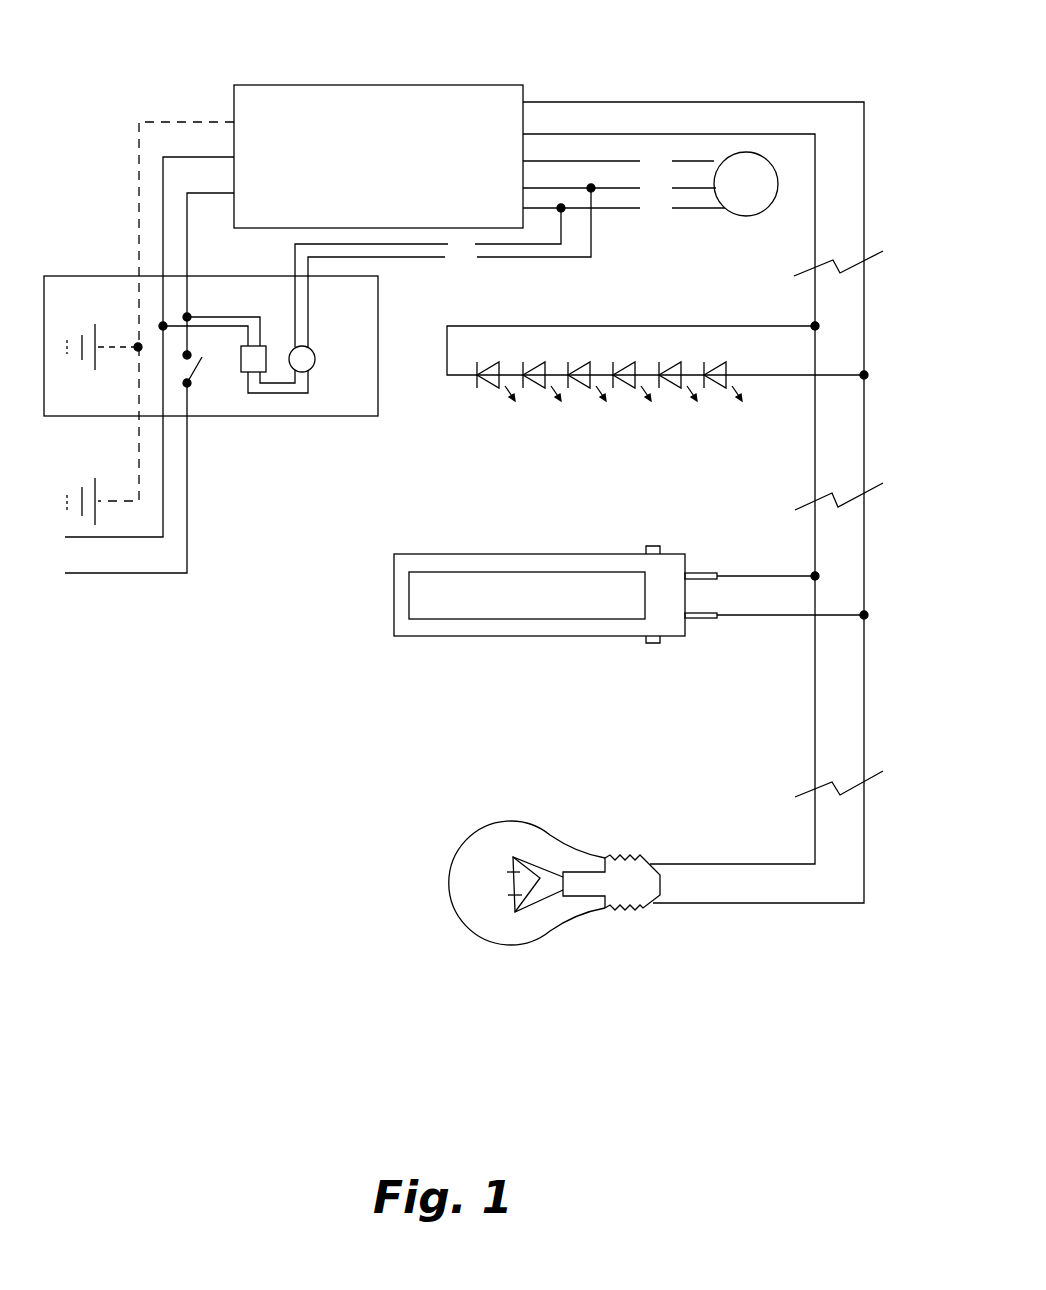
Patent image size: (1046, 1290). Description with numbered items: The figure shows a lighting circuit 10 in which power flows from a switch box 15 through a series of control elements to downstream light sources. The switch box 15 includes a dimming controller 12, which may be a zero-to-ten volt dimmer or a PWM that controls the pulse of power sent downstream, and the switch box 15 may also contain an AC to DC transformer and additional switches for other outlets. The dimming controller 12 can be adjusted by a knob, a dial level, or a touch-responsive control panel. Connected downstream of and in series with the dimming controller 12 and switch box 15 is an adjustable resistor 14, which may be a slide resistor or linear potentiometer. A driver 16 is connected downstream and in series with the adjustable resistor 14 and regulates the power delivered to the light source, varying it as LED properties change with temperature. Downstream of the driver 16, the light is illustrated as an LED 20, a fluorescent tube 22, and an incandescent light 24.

The circuit 10 is at (751, 50).
The dimming controller 12 is at (316, 367).
The adjustable resistor 14 is at (740, 217).
The switch box 15 is at (100, 277).
The driver 16 is at (415, 84).
The LED 20 is at (628, 426).
The fluorescent tube 22 is at (600, 668).
The incandescent light 24 is at (599, 953).